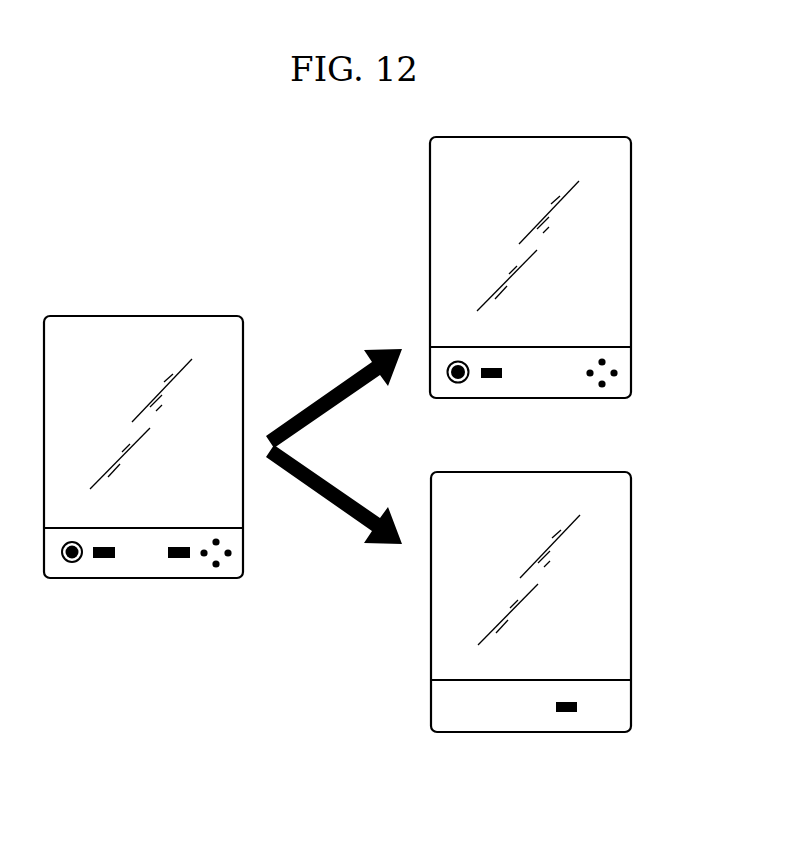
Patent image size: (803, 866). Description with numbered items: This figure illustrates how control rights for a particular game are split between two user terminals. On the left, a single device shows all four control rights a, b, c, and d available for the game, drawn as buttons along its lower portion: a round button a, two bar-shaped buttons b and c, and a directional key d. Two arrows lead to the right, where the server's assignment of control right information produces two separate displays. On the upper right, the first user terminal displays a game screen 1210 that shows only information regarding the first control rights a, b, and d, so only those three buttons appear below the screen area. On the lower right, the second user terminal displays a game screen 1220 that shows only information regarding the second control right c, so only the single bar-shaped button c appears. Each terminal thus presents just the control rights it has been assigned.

The game screen 1210 is at (576, 295).
The game screen 1220 is at (577, 630).